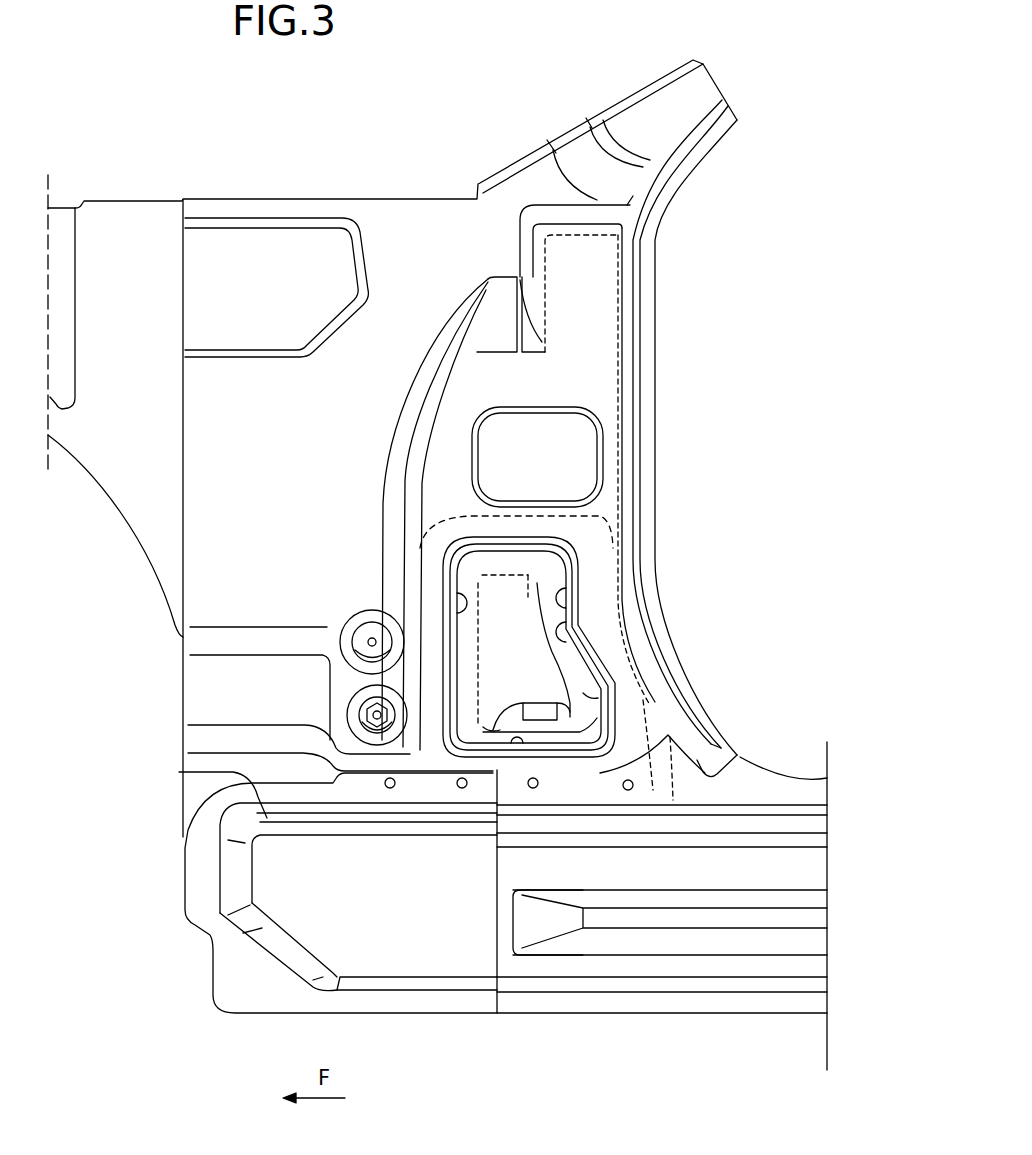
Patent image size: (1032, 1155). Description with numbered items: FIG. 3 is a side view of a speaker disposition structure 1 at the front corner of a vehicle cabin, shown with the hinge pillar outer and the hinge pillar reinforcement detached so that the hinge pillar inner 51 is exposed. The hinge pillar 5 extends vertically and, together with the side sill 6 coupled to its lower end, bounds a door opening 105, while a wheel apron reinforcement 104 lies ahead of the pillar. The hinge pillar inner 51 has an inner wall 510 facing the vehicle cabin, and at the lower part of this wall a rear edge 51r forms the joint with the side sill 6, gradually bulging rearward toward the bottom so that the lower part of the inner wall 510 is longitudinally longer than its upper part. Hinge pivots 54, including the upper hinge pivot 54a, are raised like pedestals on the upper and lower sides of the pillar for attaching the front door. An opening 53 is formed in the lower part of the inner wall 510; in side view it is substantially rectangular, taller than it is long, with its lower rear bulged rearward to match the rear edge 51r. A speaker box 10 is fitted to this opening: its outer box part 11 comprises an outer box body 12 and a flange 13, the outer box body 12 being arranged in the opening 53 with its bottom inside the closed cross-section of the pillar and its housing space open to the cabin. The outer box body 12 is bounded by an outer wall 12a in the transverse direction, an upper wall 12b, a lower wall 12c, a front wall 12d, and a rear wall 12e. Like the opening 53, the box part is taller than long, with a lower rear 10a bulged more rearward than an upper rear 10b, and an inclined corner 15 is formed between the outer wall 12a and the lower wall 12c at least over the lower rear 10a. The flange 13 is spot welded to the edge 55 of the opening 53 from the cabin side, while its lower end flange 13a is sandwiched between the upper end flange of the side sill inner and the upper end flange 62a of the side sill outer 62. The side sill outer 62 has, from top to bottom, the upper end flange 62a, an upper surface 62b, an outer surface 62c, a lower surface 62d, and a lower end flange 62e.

The speaker disposition structure 1 is at (541, 644).
The hinge pillar 5 is at (702, 438).
The side sill 6 is at (515, 897).
The speaker box 10 is at (611, 647).
The lower rear 10a is at (587, 694).
The upper rear 10b is at (581, 559).
The outer box part 11 is at (611, 647).
The outer box body 12 is at (520, 644).
The outer wall 12a is at (528, 590).
The upper wall 12b is at (497, 558).
The lower wall 12c is at (517, 746).
The front wall 12d is at (453, 600).
The rear wall 12e is at (567, 626).
The flange 13 is at (620, 549).
The lower end flange 13a is at (415, 792).
The inclined corner 15 is at (547, 727).
The hinge pillar inner 51 is at (702, 438).
The rear edge 51r is at (706, 727).
The opening 53 is at (462, 555).
The hinge pivots 54 is at (678, 465).
The hinge pivot 54a is at (588, 322).
The edge 55 is at (433, 625).
The side sill outer 62 is at (515, 885).
The upper end flange 62a is at (793, 780).
The upper surface 62b is at (232, 773).
The outer surface 62c is at (810, 872).
The lower surface 62d is at (807, 983).
The lower end flange 62e is at (817, 1000).
The wheel apron reinforcement 104 is at (148, 200).
The door opening 105 is at (823, 423).
The inner wall 510 is at (588, 367).